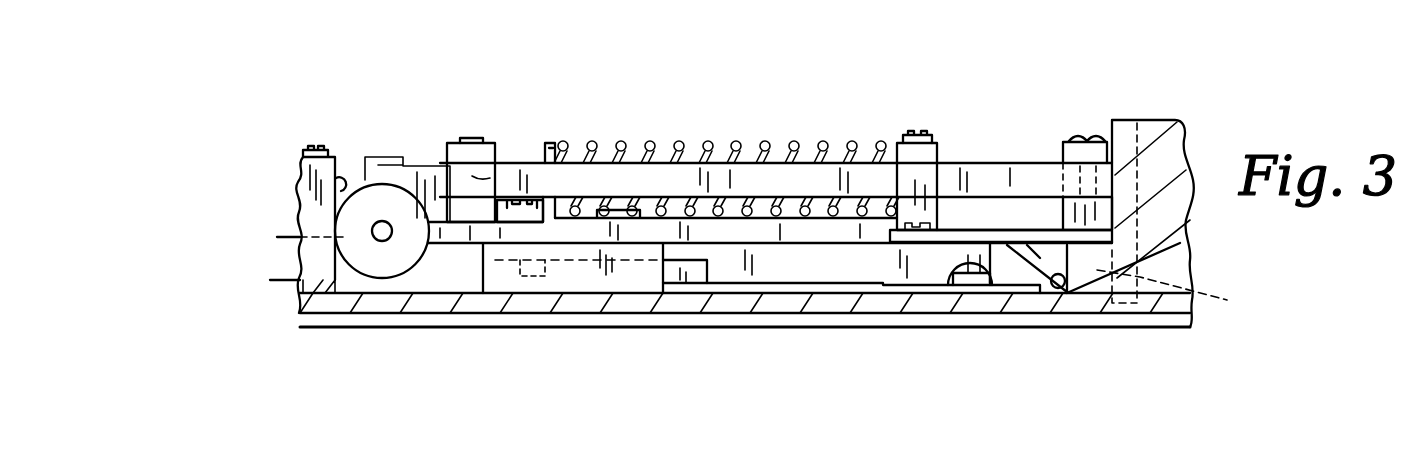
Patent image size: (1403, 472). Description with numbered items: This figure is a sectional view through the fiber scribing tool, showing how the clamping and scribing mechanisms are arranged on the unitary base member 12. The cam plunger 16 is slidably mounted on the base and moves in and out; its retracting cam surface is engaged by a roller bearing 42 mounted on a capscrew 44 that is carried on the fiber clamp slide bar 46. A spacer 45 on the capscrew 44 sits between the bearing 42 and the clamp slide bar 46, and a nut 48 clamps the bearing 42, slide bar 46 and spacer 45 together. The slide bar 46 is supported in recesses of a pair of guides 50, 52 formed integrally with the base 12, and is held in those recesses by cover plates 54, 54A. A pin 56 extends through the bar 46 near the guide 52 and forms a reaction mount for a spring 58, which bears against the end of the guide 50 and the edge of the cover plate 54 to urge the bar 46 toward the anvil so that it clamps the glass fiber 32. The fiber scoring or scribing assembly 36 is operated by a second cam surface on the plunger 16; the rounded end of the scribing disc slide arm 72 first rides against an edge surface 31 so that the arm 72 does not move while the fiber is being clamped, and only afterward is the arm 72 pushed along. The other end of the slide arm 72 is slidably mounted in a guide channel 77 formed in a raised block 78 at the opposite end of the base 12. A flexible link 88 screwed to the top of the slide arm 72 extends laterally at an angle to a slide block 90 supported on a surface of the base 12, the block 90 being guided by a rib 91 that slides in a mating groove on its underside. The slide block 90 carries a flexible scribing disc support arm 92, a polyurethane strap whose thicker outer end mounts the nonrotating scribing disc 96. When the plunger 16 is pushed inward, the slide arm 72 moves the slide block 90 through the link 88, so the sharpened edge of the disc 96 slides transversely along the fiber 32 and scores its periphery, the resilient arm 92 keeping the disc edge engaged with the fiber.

The base member 12 is at (843, 302).
The cam plunger 16 is at (1045, 278).
The edge surface 31 is at (949, 295).
The glass fiber 32 is at (347, 172).
The fiber scoring or scribing assembly 36 is at (1055, 270).
The roller bearing 42 is at (1177, 291).
The capscrew 44 is at (1078, 147).
The spacer 45 is at (1062, 212).
The fiber clamp slide bar 46 is at (1018, 165).
The nut 48 is at (1072, 150).
The guide 50 is at (940, 178).
The guide 52 is at (500, 160).
The cover plate 54 is at (936, 148).
The cover plate 54A is at (452, 140).
The pin 56 is at (551, 143).
The spring 58 is at (675, 158).
The scribing disc slide arm 72 is at (788, 263).
The guide channel 77 is at (292, 226).
The raised block 78 is at (295, 186).
The flexible link 88 is at (727, 230).
The slide block 90 is at (582, 272).
The rib 91 is at (687, 270).
The scribing disc support arm 92 is at (458, 230).
The scribing disc 96 is at (385, 190).